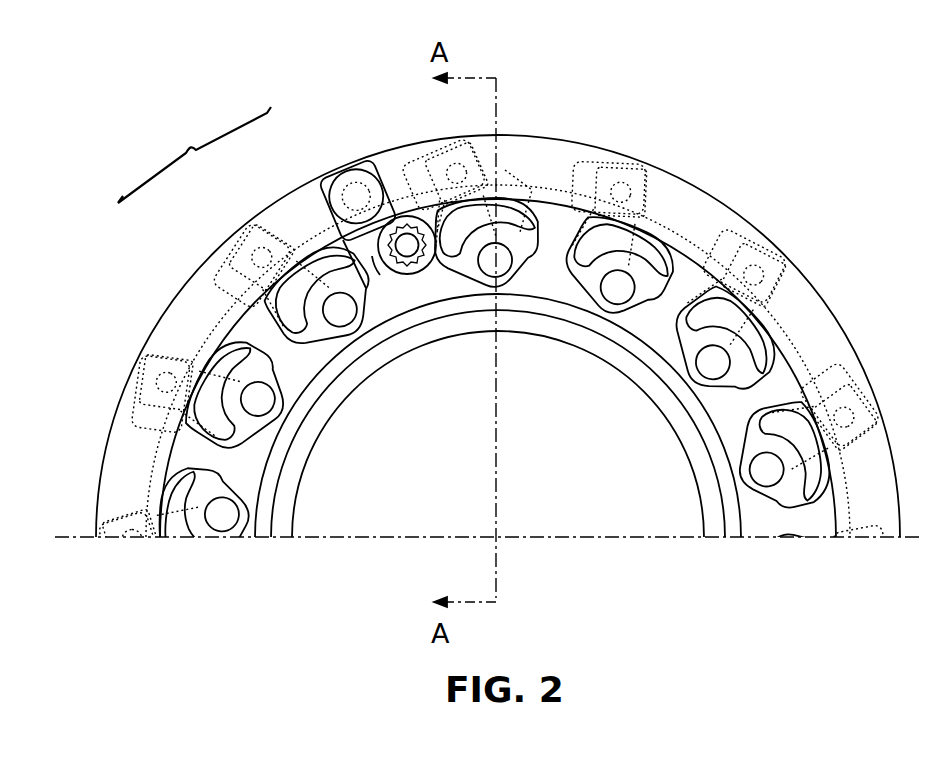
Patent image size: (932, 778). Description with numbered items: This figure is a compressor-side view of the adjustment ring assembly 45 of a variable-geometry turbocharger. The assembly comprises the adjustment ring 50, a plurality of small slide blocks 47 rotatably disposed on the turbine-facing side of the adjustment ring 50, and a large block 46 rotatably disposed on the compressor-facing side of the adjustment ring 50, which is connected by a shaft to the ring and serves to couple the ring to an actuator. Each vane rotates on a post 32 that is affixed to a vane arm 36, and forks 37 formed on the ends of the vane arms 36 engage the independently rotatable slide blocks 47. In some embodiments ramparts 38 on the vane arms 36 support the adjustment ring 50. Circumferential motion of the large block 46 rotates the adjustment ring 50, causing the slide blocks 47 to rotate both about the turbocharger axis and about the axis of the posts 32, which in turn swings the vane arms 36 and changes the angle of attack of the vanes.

The post 32 is at (617, 290).
The vane arm 36 is at (481, 283).
The fork 37 is at (505, 170).
The rampart 38 is at (522, 220).
The adjustment ring assembly 45 is at (192, 150).
The large block 46 is at (325, 178).
The slide block 47 is at (240, 230).
The adjustment ring 50 is at (195, 288).